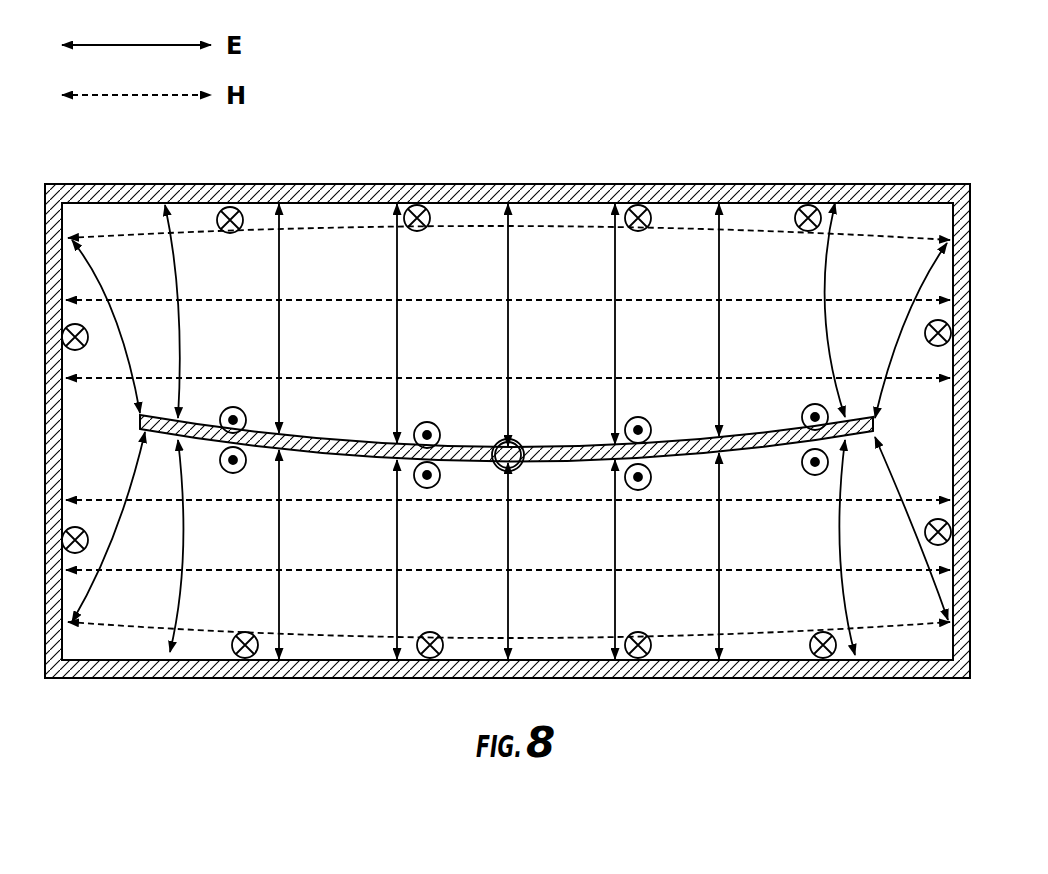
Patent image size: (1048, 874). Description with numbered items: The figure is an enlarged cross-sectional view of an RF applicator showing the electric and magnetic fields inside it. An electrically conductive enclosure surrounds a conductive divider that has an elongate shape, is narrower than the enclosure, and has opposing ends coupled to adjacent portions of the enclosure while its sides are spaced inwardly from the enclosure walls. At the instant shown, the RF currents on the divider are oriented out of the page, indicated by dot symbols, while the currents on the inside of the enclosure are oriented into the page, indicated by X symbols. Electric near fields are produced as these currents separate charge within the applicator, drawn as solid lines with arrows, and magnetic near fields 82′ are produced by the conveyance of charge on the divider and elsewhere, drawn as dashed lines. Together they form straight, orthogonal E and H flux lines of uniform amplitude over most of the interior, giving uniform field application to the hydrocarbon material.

The magnetic near fields 82′ is at (815, 572).